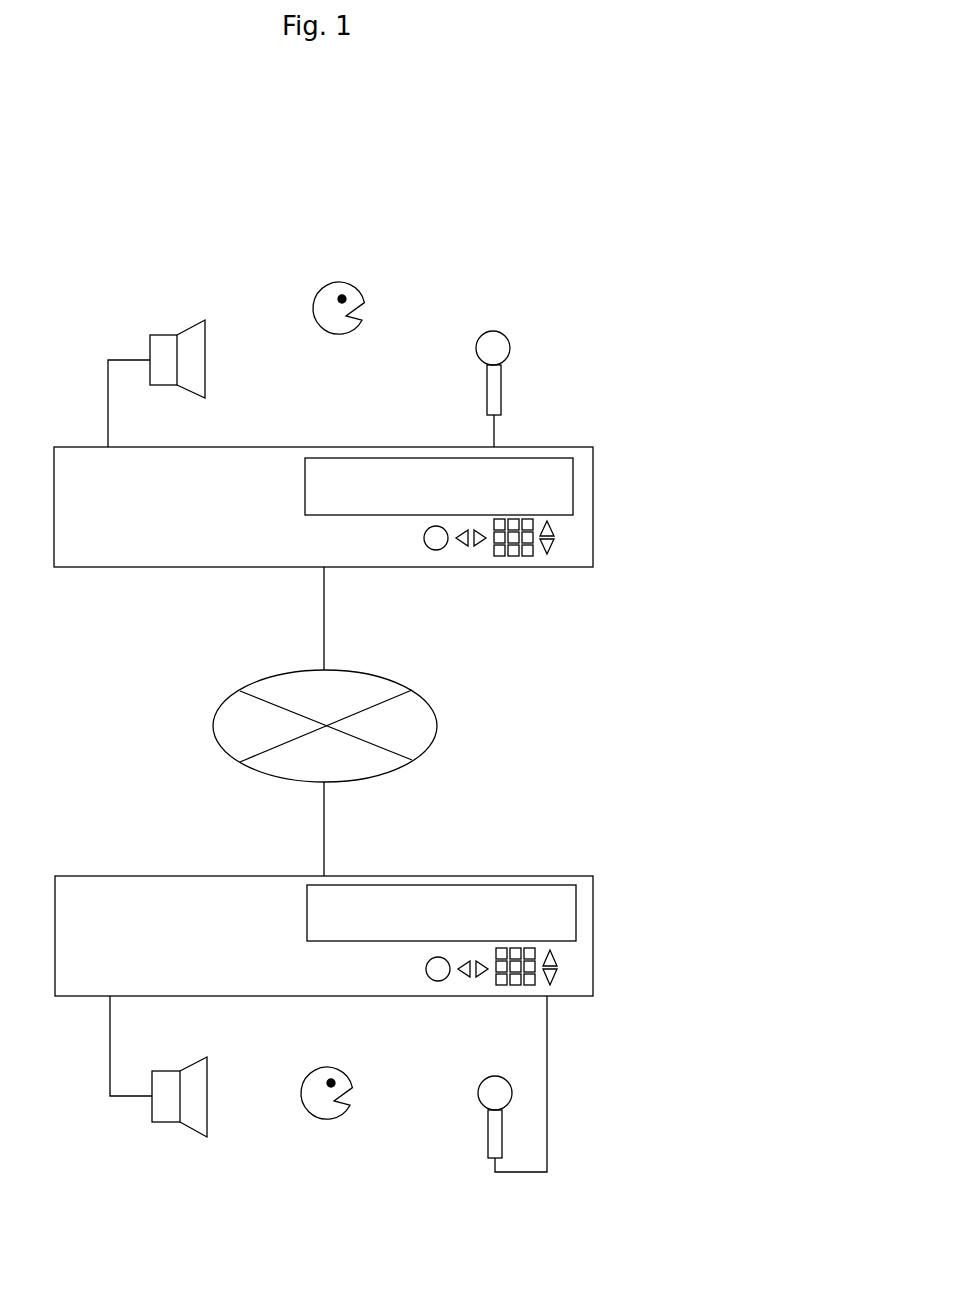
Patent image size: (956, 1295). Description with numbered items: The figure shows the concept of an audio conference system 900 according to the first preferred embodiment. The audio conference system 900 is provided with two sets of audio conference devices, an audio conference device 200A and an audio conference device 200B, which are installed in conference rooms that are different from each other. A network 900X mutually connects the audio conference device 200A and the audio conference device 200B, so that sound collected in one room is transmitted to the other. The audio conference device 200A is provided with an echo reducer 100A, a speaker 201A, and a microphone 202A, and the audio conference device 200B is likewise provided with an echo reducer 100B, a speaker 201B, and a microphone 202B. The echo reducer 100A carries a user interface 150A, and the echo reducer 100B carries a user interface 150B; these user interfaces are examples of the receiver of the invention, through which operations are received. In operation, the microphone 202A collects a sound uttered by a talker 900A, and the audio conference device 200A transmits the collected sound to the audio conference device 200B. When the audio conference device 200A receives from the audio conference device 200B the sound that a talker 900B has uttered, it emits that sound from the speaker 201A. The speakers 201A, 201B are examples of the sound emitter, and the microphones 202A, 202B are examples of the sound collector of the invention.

The audio conference system 900 is at (605, 145).
The audio conference device 200A is at (607, 255).
The audio conference device 200B is at (580, 776).
The speaker 201A is at (205, 322).
The speaker 201B is at (199, 1075).
The microphone 202A is at (506, 333).
The microphone 202B is at (483, 1080).
The talker 900A is at (341, 283).
The talker 900B is at (334, 1120).
The network 900X is at (428, 700).
The echo reducer 100A is at (594, 448).
The echo reducer 100B is at (596, 876).
The user interface 150A is at (493, 485).
The user interface 150B is at (495, 910).